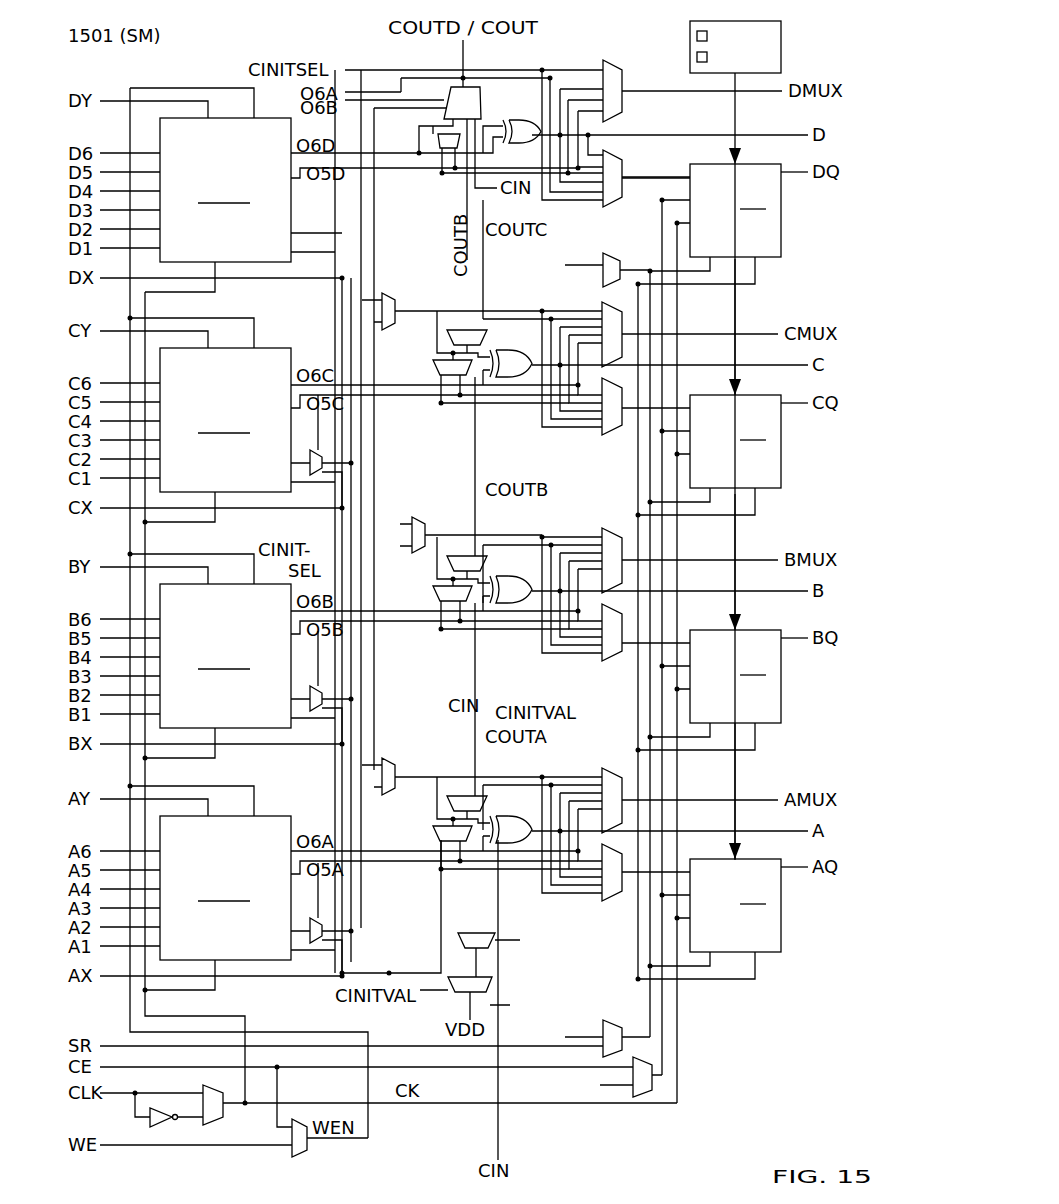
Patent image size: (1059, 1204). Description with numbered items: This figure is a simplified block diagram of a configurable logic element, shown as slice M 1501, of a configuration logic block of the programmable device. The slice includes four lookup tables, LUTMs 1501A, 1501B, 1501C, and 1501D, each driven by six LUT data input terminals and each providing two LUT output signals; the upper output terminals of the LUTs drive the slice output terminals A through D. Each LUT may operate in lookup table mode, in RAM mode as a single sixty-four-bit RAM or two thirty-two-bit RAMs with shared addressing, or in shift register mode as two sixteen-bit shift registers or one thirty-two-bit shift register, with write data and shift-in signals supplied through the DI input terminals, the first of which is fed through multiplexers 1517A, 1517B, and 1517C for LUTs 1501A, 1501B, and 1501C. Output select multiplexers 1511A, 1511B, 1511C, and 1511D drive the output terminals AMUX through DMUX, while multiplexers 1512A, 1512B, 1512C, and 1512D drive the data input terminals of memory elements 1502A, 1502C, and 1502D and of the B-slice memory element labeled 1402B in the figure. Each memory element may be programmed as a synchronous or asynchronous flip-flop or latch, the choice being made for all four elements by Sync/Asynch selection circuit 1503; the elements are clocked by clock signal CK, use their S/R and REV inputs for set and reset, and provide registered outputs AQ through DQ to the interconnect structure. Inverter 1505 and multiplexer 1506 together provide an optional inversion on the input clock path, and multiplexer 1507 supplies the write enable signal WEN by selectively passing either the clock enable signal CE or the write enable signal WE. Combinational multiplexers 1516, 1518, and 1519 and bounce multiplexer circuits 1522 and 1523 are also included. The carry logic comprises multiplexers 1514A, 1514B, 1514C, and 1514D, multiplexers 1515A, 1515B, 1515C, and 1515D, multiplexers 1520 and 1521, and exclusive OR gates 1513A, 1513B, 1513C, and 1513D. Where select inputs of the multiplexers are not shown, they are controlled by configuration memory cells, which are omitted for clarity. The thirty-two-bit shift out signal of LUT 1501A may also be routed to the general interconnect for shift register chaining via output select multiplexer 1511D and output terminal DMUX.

The slice M 1501 is at (170, 45).
The lookup table (LUTM) 1501D is at (225, 190).
The lookup table (LUTM) 1501C is at (254, 458).
The lookup table (LUTM) 1501B is at (225, 656).
The lookup table (LUTM) 1501A is at (225, 888).
The memory element 1502D is at (735, 210).
The memory element 1502C is at (781, 463).
The memory element B 1402B is at (735, 676).
The memory element 1502A is at (735, 905).
The Sync/Asynch selection circuit 1503 is at (690, 48).
The inverter 1505 is at (158, 1128).
The multiplexer 1506 is at (222, 1118).
The multiplexer 1507 is at (300, 1158).
The output select multiplexer 1511D is at (622, 96).
The output select multiplexer 1511C is at (604, 306).
The output select multiplexer 1511B is at (580, 550).
The output select multiplexer 1511A is at (580, 790).
The multiplexer 1512D is at (612, 165).
The multiplexer 1512C is at (614, 438).
The multiplexer 1512B is at (581, 647).
The multiplexer 1512A is at (581, 887).
The exclusive OR gate 1513D is at (520, 110).
The exclusive OR gate 1513C is at (511, 351).
The exclusive OR gate 1513B is at (511, 577).
The exclusive OR gate 1513A is at (511, 817).
The carry logic multiplexer 1514D is at (470, 86).
The carry logic multiplexer 1514C is at (460, 329).
The carry logic multiplexer 1514B is at (454, 541).
The carry logic multiplexer 1514A is at (454, 781).
The carry logic multiplexer 1515D is at (445, 150).
The carry logic multiplexer 1515C is at (455, 378).
The carry logic multiplexer 1515B is at (487, 622).
The carry logic multiplexer 1515A is at (487, 862).
The combinational multiplexer 1516 is at (390, 292).
The multiplexer 1517C is at (316, 478).
The multiplexer 1517B is at (298, 700).
The multiplexer 1517A is at (298, 932).
The combinational multiplexer 1518 is at (452, 535).
The combinational multiplexer 1519 is at (452, 795).
The carry logic multiplexer 1520 is at (492, 980).
The carry logic multiplexer 1521 is at (606, 254).
The bounce multiplexer circuit 1522 is at (618, 1014).
The bounce multiplexer circuit 1523 is at (642, 1098).